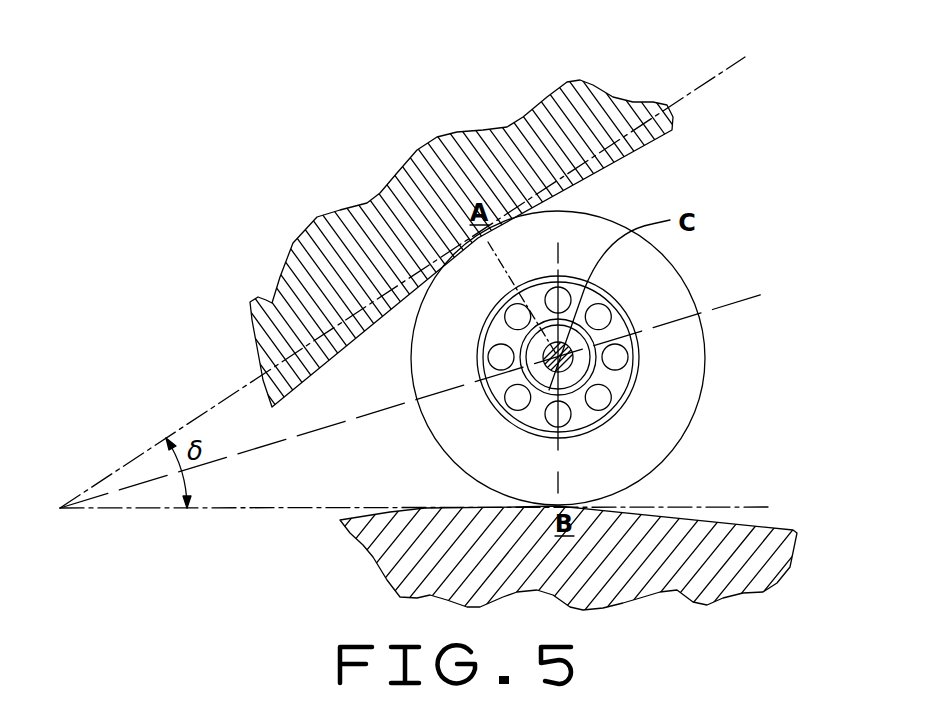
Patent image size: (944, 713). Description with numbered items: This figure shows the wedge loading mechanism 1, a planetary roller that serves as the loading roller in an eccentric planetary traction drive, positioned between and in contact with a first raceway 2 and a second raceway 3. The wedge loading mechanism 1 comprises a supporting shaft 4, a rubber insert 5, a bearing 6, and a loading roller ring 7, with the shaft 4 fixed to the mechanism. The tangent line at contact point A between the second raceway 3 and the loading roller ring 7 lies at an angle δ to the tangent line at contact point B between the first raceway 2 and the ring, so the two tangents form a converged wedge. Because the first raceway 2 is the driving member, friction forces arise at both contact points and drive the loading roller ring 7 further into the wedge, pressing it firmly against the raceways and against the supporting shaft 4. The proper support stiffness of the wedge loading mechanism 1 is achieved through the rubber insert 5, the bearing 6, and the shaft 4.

The wedge loading mechanism 1 is at (576, 358).
The first raceway 2 is at (777, 557).
The second raceway 3 is at (623, 106).
The supporting shaft 4 is at (561, 360).
The rubber insert 5 is at (549, 390).
The bearing 6 is at (520, 322).
The loading roller ring 7 is at (670, 367).